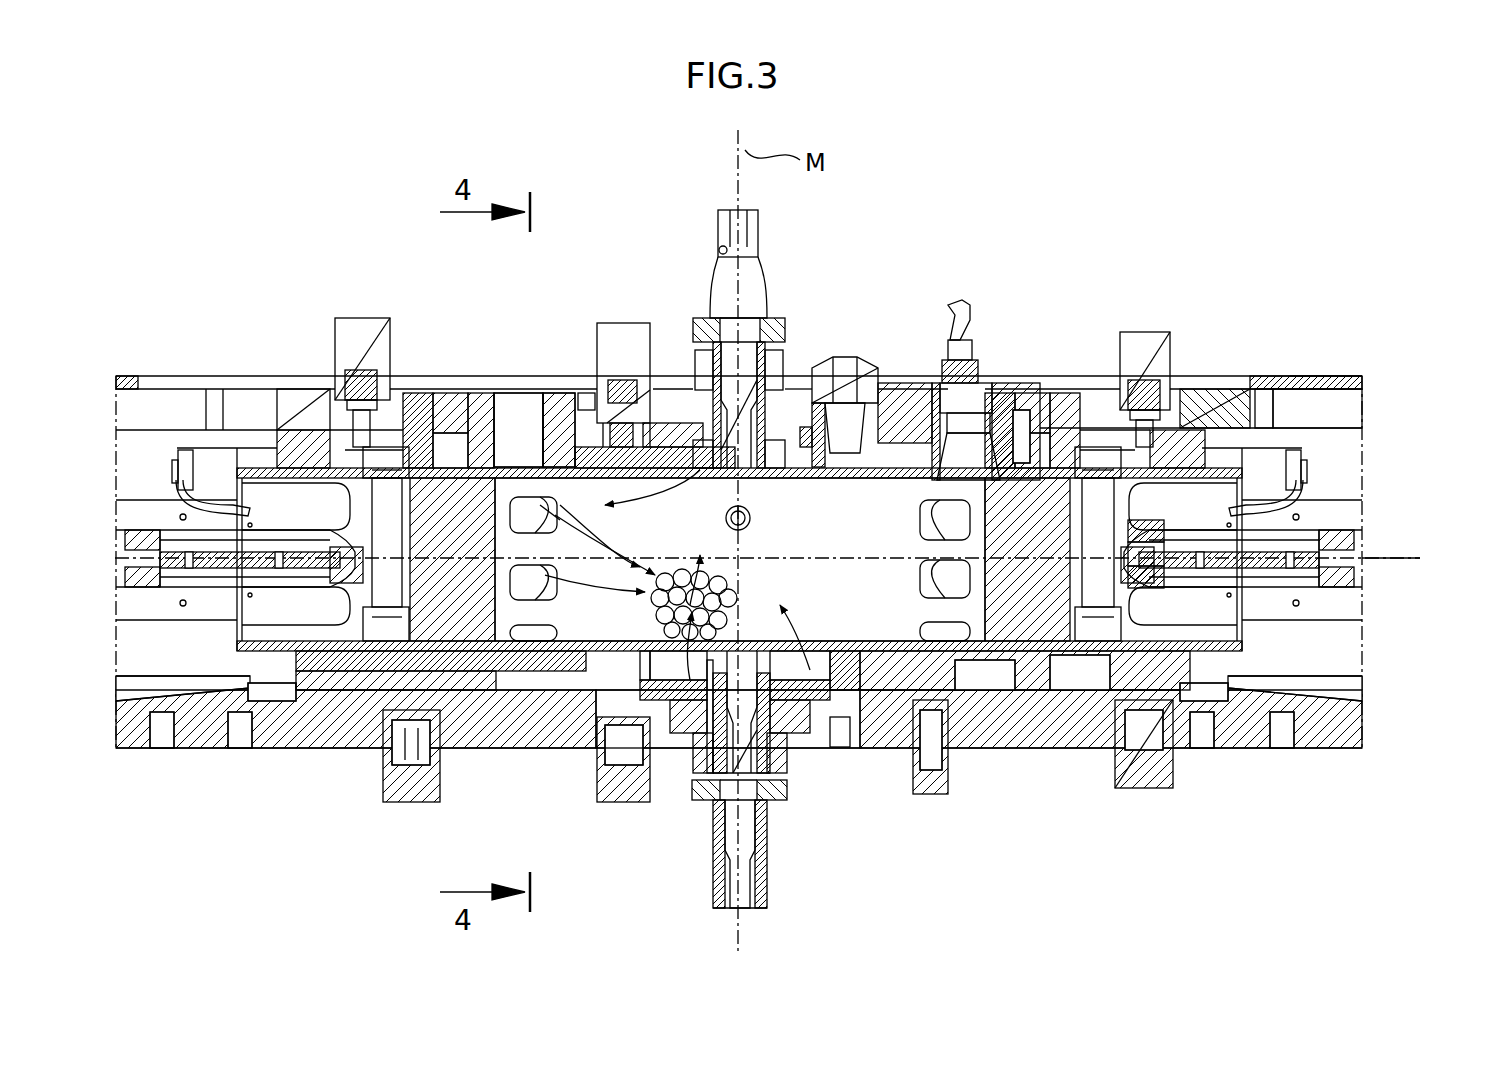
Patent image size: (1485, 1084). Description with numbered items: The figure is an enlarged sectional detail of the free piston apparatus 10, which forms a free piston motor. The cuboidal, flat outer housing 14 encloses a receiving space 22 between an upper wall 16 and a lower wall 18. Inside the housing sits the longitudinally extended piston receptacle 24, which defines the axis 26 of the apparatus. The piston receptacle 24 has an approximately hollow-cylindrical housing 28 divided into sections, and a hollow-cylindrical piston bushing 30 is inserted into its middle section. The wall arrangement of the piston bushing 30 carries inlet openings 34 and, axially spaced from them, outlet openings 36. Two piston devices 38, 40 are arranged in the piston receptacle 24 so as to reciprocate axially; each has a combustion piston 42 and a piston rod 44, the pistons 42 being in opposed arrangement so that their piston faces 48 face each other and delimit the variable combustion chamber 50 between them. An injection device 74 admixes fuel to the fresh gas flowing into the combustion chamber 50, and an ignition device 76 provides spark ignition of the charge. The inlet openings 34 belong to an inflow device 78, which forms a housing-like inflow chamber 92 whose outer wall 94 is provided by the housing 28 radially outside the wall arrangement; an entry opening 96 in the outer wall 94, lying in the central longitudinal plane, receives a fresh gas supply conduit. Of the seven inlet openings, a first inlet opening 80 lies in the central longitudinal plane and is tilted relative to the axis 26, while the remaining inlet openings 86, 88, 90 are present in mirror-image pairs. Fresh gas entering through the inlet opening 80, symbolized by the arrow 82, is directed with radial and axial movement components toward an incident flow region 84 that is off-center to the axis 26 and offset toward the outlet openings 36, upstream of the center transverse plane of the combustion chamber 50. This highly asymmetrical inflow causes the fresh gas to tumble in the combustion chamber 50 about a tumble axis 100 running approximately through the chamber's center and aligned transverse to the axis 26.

The free piston apparatus 10 is at (1085, 210).
The outer housing 14 is at (1280, 370).
The upper wall 16 is at (1335, 375).
The lower wall 18 is at (1283, 745).
The receiving space 22 is at (1330, 425).
The piston receptacle 24 is at (572, 700).
The axis 26 is at (1388, 572).
The housing 28 is at (440, 700).
The piston bushing 30 is at (845, 660).
The inlet openings 34 is at (640, 400).
The outlet openings 36 is at (890, 535).
The piston device 38 is at (272, 520).
The piston device 40 is at (1150, 530).
The piston 42 is at (450, 505).
The piston rod 44 is at (170, 555).
The piston face 48 is at (955, 500).
The combustion chamber 50 is at (790, 608).
The injection device 74 is at (738, 450).
The ignition device 76 is at (752, 512).
The inflow device 78 is at (585, 505).
The first inlet opening 80 is at (515, 445).
The arrow 82 is at (600, 545).
The incident flow region 84 is at (660, 700).
The inlet opening 86 is at (600, 530).
The inlet opening 88 is at (555, 600).
The inlet opening 90 is at (540, 670).
The inflow chamber 92 is at (600, 530).
The outer wall 94 is at (500, 680).
The entry opening 96 is at (437, 510).
The tumble axis 100 is at (742, 556).